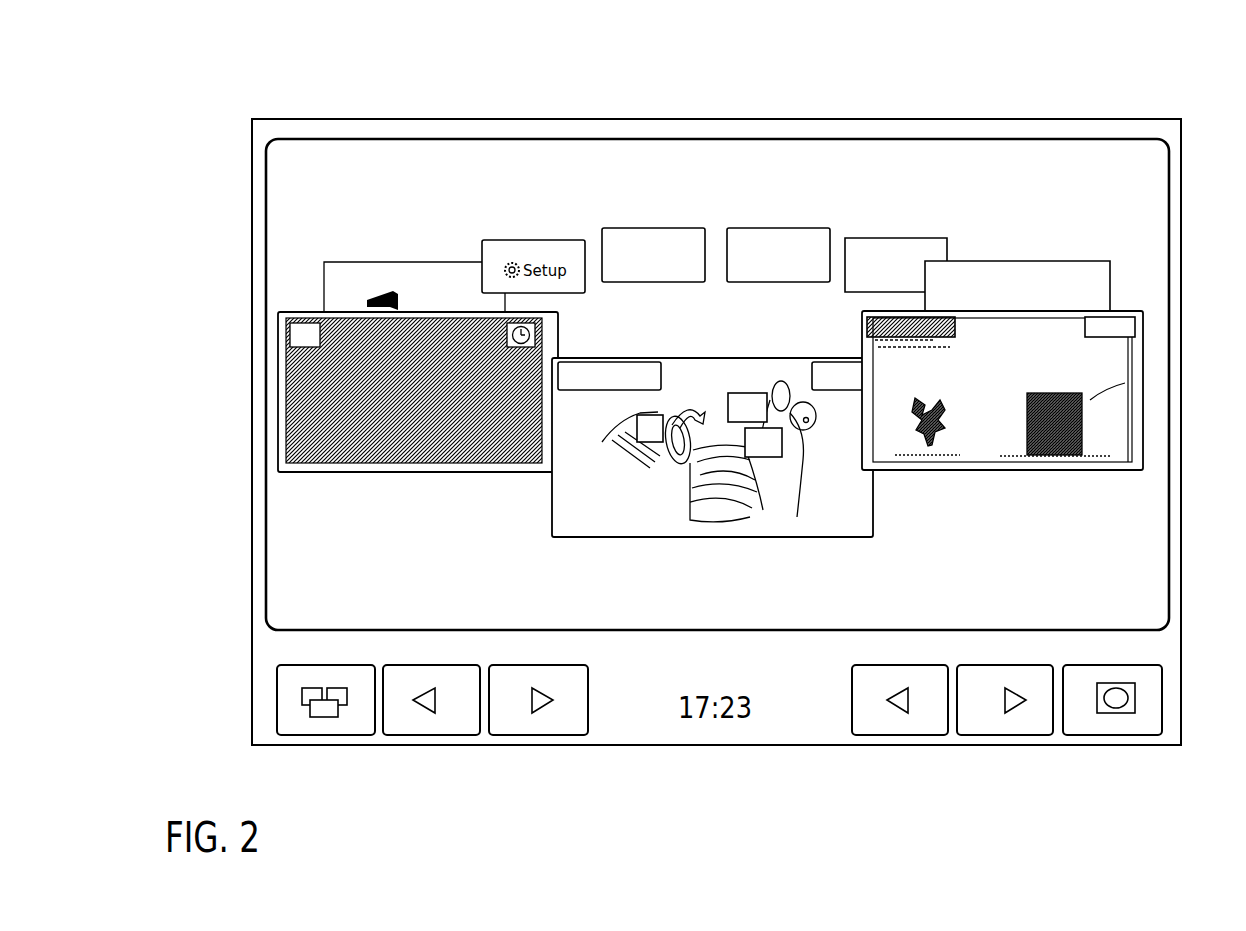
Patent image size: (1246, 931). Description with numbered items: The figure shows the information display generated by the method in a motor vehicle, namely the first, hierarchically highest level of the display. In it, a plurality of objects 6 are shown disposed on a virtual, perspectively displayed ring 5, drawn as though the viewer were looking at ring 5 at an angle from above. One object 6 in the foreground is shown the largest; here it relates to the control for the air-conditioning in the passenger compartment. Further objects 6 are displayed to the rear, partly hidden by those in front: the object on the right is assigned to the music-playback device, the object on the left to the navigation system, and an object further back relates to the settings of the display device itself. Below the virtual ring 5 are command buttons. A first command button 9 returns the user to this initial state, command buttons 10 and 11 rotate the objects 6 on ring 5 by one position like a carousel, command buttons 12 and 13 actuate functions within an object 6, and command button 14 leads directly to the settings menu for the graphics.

The virtual ring 5 is at (1170, 115).
The object 6 is at (283, 428).
The first command button 9 is at (345, 726).
The command button 10 is at (460, 727).
The command button 11 is at (564, 727).
The command button 12 is at (902, 727).
The command button 13 is at (993, 727).
The command button 14 is at (1110, 727).